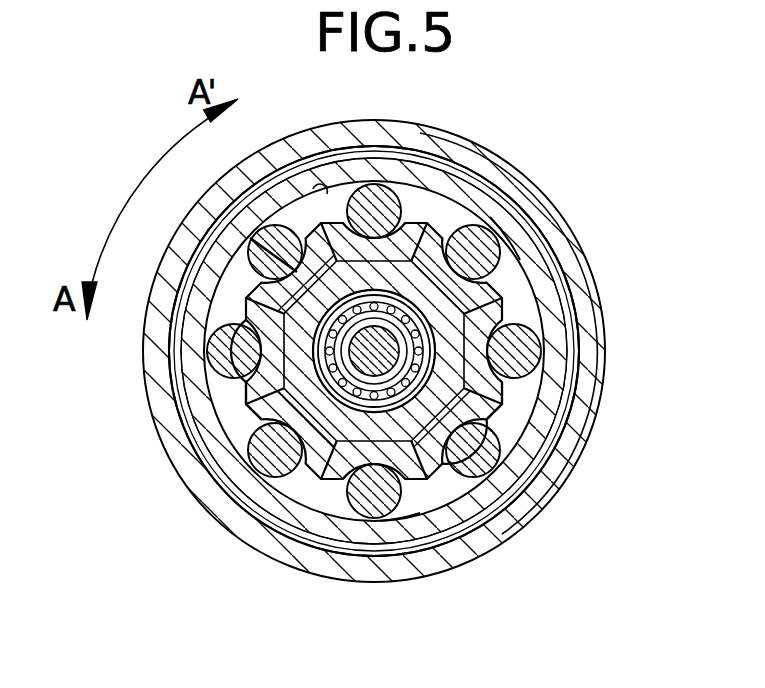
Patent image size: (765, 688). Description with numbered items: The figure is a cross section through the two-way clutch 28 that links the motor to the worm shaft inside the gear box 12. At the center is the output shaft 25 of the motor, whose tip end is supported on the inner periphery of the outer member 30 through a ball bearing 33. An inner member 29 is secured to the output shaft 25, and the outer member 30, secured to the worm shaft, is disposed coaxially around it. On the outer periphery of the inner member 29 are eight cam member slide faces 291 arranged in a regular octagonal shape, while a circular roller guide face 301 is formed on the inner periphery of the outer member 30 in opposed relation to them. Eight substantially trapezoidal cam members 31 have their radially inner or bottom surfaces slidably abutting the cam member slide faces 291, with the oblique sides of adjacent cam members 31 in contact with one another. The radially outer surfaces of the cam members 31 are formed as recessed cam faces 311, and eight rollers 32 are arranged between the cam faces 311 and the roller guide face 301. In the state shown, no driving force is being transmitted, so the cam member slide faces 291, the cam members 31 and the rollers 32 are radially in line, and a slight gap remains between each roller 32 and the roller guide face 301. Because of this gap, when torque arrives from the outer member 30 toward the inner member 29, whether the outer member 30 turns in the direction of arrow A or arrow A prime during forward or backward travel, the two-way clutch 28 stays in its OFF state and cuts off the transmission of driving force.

The gear box 12 is at (374, 351).
The output shaft 25 is at (374, 368).
The two-way clutch 28 is at (447, 351).
The inner member 29 is at (246, 232).
The cam member slide faces 291 is at (503, 246).
The outer member 30 is at (360, 140).
The roller guide face 301 is at (313, 188).
The cam members 31 is at (376, 365).
The cam faces 311 is at (247, 320).
The rollers 32 is at (388, 207).
The ball bearing 33 is at (373, 307).